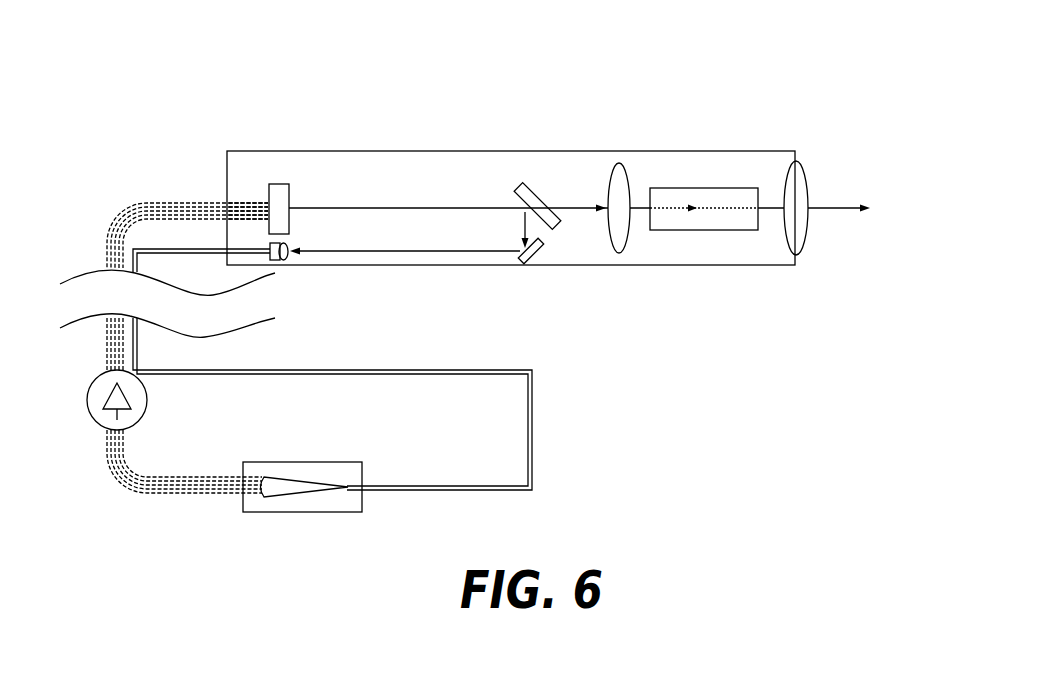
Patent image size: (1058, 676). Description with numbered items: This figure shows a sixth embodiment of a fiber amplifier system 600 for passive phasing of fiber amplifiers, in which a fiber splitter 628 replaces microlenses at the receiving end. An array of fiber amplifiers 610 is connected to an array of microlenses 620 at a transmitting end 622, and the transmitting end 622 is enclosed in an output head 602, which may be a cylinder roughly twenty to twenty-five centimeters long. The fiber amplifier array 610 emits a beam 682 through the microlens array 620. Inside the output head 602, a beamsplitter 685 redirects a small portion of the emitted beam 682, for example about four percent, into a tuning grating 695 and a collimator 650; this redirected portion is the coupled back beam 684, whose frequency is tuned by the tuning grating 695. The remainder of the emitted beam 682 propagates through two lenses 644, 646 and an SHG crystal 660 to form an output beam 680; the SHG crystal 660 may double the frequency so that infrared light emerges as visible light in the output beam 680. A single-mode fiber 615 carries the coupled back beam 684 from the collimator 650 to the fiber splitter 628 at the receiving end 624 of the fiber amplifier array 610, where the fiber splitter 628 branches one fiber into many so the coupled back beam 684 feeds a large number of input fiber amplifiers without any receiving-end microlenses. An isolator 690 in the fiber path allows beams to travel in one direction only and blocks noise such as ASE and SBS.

The fiber amplifier system 600 is at (694, 86).
The output head 602 is at (566, 151).
The fiber amplifier array 610 is at (168, 194).
The single-mode fiber 615 is at (542, 475).
The microlens array 620 is at (272, 182).
The transmitting end 622 is at (284, 182).
The receiving end 624 is at (303, 470).
The fiber splitter 628 is at (323, 493).
The lens 644 is at (628, 186).
The lens 646 is at (805, 175).
The collimator 650 is at (278, 264).
The SHG crystal 660 is at (737, 184).
The output beam 680 is at (825, 212).
The emitted beam 682 is at (453, 206).
The coupled back beam 684 is at (509, 254).
The beamsplitter 685 is at (672, 292).
The isolator 690 is at (93, 419).
The tuning grating 695 is at (527, 267).